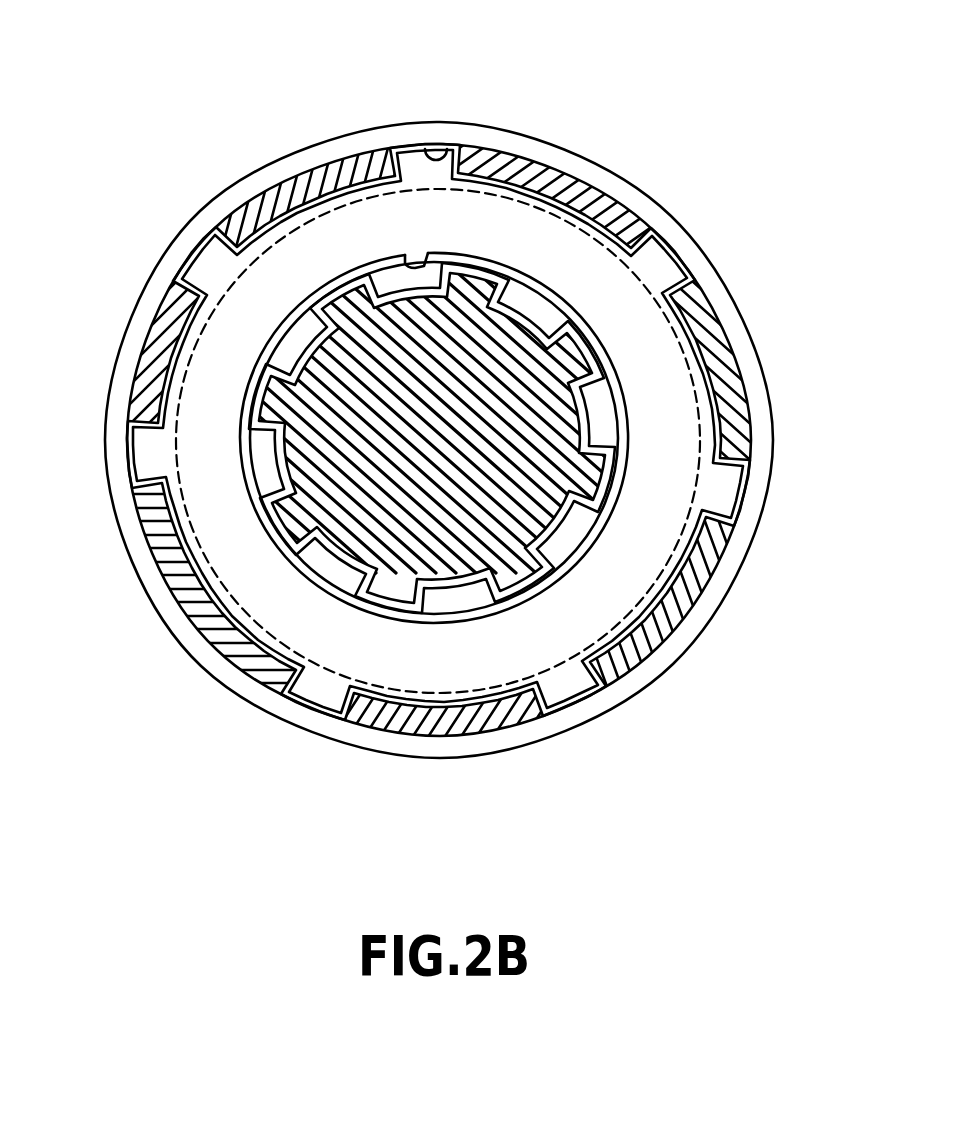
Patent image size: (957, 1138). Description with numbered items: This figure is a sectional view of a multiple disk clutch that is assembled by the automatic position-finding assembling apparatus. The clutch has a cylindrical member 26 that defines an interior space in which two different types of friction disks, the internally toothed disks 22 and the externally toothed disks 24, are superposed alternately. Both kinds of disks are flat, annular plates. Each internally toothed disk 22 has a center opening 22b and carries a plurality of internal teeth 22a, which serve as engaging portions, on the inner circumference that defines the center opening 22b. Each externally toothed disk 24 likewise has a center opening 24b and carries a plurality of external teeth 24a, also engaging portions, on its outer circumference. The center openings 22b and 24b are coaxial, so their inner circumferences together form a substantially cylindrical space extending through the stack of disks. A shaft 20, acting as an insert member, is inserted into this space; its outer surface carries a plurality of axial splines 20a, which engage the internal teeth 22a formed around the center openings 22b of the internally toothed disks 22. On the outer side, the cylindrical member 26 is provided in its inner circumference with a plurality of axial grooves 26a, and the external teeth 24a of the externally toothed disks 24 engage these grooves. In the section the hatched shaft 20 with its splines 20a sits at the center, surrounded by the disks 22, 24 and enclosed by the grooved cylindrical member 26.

The shaft 20 is at (505, 548).
The axial splines 20a is at (572, 357).
The internally toothed disk 22 is at (263, 457).
The internal teeth 22a is at (288, 338).
The center opening 22b is at (278, 486).
The externally toothed disk 24 is at (313, 261).
The external teeth 24a is at (427, 262).
The center opening 24b is at (427, 262).
The cylindrical member 26 is at (414, 144).
The axial grooves 26a is at (445, 150).